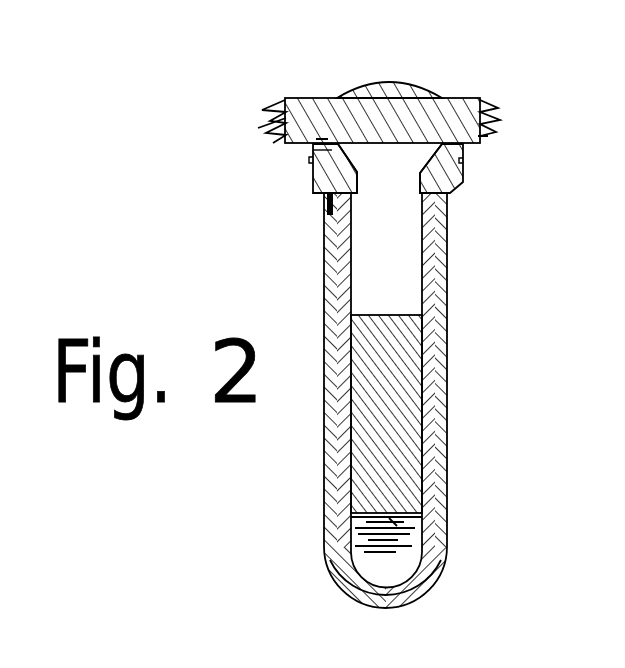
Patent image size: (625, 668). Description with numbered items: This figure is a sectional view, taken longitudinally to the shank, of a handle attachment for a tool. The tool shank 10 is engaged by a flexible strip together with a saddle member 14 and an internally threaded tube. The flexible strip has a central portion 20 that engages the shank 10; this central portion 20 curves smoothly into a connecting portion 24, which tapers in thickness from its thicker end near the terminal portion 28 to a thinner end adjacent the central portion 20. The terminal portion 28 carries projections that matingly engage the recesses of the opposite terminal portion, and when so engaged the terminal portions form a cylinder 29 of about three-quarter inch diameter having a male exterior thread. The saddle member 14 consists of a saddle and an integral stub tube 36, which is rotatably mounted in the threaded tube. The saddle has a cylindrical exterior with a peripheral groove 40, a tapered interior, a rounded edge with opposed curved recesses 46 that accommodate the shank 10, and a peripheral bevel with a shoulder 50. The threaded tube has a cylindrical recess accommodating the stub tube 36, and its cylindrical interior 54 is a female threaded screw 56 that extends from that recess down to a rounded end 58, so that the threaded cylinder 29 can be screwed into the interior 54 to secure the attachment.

The tool shank 10 is at (479, 119).
The central portion 20 is at (404, 81).
The curved recesses 46 is at (325, 142).
The saddle member 14 is at (461, 177).
The peripheral groove 40 is at (316, 161).
The shoulder 50 is at (330, 213).
The stub tube 36 is at (449, 236).
The connecting portion 24 is at (394, 285).
The terminal portion 28 is at (404, 399).
The cylindrical interior 54 is at (441, 485).
The female threaded screw 56 is at (410, 528).
The rounded end 58 is at (421, 577).
The cylinder 29 is at (393, 522).